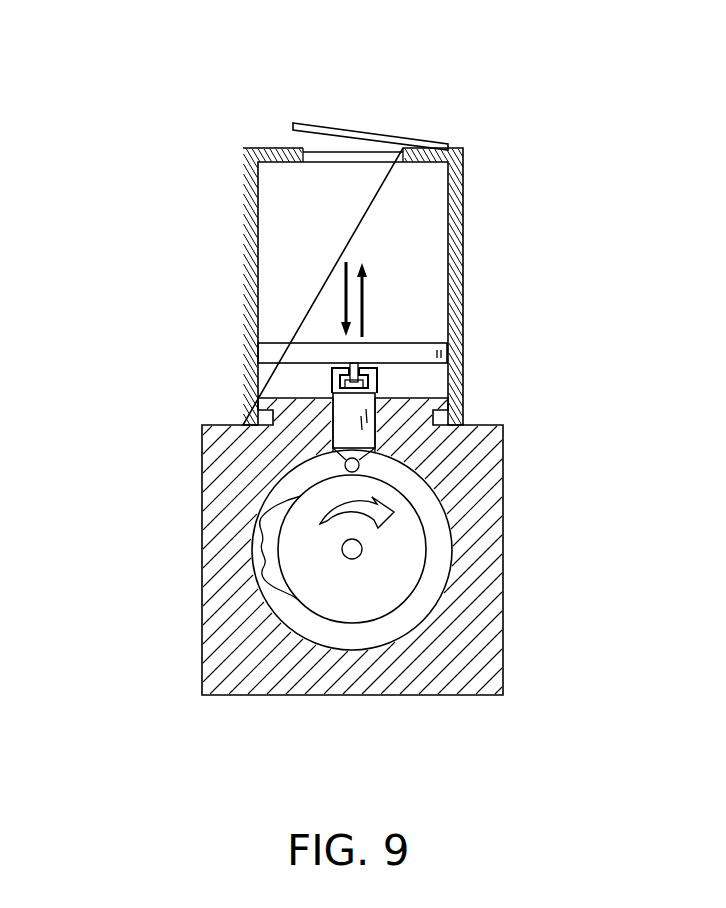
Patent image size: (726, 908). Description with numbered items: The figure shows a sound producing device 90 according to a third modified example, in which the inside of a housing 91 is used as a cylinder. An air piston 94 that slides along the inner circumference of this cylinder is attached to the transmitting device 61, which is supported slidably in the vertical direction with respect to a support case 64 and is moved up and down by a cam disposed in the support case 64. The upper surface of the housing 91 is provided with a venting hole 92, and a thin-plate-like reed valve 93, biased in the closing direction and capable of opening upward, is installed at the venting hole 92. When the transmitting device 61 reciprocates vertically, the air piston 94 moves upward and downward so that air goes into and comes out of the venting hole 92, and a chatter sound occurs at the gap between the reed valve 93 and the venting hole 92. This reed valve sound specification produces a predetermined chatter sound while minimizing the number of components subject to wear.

The sound producing device 90 is at (304, 226).
The housing 91 is at (243, 240).
The venting hole 92 is at (343, 158).
The reed valve 93 is at (327, 123).
The air piston 94 is at (397, 352).
The transmitting device 61 is at (342, 418).
The support case 64 is at (198, 485).